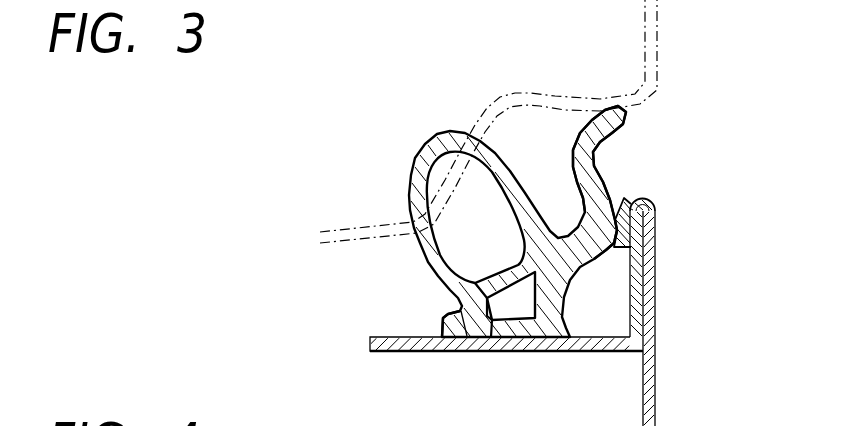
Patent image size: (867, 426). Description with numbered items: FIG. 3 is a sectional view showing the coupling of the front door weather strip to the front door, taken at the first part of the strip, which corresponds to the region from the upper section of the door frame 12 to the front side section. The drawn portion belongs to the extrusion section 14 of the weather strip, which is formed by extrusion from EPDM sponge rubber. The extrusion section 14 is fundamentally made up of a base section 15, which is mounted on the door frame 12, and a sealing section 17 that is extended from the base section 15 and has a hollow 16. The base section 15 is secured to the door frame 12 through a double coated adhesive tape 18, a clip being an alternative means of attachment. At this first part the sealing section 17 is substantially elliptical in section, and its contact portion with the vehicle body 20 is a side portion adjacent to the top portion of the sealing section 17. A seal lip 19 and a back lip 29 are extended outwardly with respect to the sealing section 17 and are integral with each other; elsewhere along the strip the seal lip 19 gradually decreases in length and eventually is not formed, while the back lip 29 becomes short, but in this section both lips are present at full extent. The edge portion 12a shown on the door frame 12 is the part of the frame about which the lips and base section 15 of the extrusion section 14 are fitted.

The door frame 12 is at (657, 314).
The hemmed flange edge of panel 12a is at (644, 201).
The extrusion section 14 is at (398, 160).
The base section 15 is at (441, 323).
The hollow 16 is at (486, 233).
The sealing section 17 is at (513, 176).
The double coated adhesive tape 18 is at (486, 340).
The seal lip 19 is at (599, 172).
The vehicle body 20 is at (660, 64).
The back lip 29 is at (656, 246).